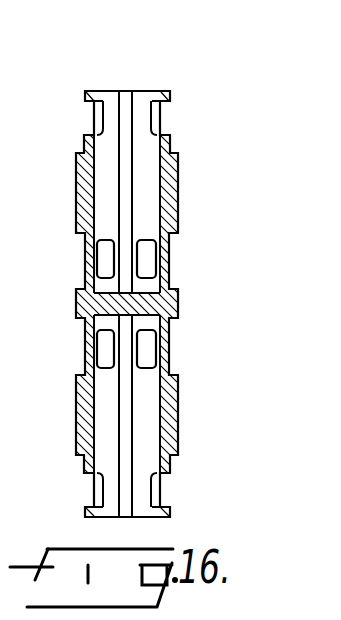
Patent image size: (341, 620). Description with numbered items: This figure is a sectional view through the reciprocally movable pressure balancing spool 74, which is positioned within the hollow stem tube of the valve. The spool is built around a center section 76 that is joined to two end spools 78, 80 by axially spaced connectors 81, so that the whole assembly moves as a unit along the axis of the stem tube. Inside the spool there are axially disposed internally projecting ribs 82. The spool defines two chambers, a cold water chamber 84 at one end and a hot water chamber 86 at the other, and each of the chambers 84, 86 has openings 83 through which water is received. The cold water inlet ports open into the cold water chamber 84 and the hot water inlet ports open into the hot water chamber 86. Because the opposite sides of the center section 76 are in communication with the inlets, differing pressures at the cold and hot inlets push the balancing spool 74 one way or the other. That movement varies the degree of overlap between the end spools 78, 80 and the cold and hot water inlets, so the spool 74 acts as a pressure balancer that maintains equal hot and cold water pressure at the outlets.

The pressure balancing spool 74 is at (178, 189).
The center section 76 is at (147, 307).
The end spool 78 is at (85, 96).
The end spool 80 is at (85, 508).
The connectors 81 is at (165, 274).
The internally projecting ribs 82 is at (123, 193).
The openings 83 is at (103, 252).
The cold water chamber 84 is at (148, 424).
The hot water chamber 86 is at (148, 170).